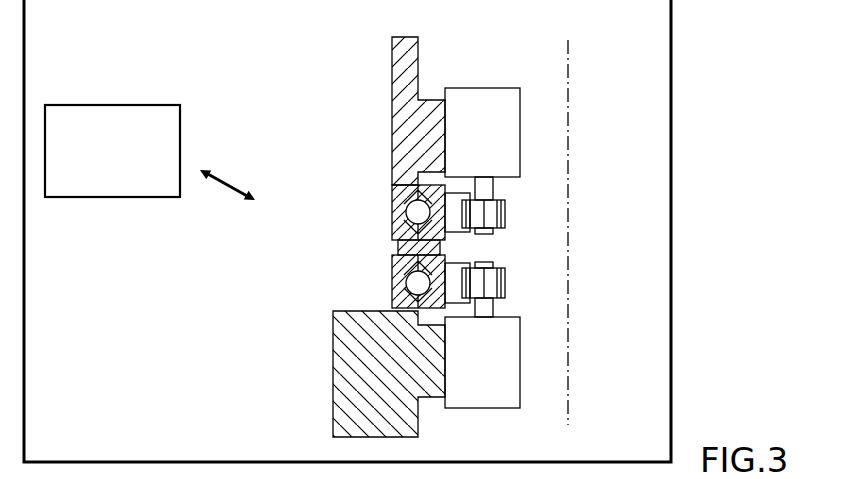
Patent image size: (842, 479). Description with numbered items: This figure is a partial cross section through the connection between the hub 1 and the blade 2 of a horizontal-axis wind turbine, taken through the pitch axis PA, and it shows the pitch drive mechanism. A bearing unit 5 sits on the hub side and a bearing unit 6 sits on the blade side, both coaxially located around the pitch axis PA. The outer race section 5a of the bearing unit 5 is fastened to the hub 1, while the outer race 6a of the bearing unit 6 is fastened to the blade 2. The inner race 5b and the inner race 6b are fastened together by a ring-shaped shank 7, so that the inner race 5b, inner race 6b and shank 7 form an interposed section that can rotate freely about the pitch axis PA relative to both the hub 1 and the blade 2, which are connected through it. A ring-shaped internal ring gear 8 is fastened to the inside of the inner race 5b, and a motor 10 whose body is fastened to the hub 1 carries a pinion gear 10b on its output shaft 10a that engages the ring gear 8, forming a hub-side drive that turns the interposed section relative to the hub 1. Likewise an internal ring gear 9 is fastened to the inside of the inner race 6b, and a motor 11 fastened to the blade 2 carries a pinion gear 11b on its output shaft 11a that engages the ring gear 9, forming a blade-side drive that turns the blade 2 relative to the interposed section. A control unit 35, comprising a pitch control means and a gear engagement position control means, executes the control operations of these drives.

The hub 1 is at (351, 416).
The blade 2 is at (392, 103).
The bearing unit 5 is at (365, 315).
The outer race section 5a is at (392, 259).
The inner race 5b is at (412, 306).
The bearing unit 6 is at (363, 177).
The outer race 6a is at (392, 226).
The inner race 6b is at (414, 186).
The shank 7 is at (398, 247).
The internal ring gear 8 is at (450, 263).
The internal ring gear 9 is at (450, 232).
The motor 10 is at (483, 408).
The output shaft 10a is at (485, 312).
The pinion gear 10b is at (505, 292).
The motor 11 is at (488, 88).
The output shaft 11a is at (493, 194).
The pinion gear 11b is at (505, 214).
The control unit 35 is at (145, 104).
The pitch axis PA is at (568, 112).